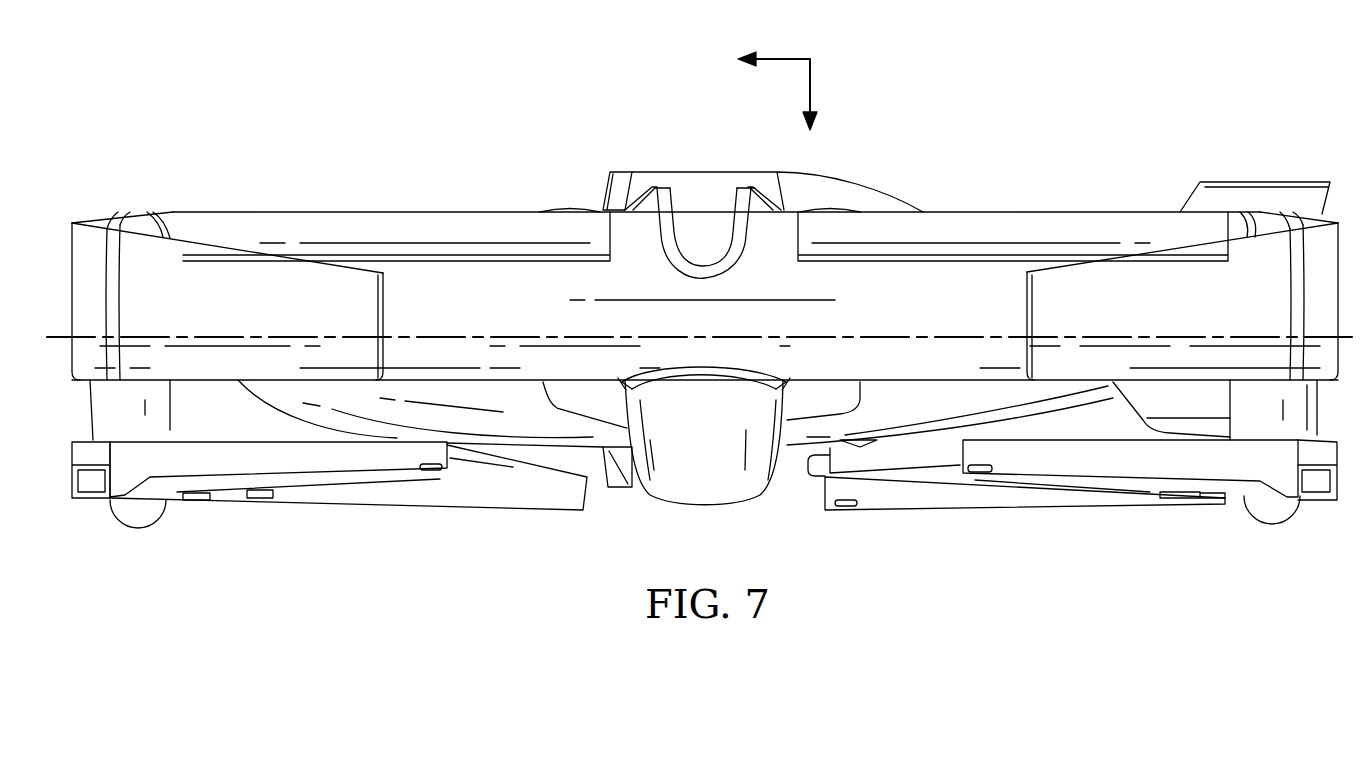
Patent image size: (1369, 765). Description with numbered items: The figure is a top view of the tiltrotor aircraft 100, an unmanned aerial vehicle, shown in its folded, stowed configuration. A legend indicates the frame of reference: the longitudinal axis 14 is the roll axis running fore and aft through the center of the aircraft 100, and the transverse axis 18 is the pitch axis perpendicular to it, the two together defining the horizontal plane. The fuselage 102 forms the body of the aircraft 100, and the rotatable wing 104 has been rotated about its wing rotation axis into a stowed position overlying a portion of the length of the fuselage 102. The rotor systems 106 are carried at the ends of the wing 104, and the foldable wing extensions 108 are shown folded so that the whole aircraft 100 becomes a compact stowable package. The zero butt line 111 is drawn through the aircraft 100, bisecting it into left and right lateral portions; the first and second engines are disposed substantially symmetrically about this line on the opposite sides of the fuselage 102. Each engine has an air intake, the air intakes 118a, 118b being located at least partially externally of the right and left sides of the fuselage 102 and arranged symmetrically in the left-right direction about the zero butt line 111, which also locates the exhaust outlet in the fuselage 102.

The longitudinal axis X 14 is at (784, 59).
The transverse axis Y 18 is at (812, 86).
The tiltrotor aircraft 100 is at (962, 153).
The fuselage 102 is at (523, 448).
The rotatable wing 104 is at (481, 280).
The rotor systems 106 is at (113, 534).
The foldable wing extensions 108 is at (228, 247).
The zero butt line 111 is at (960, 335).
The air intake 118a is at (622, 479).
The air intake 118b is at (622, 190).